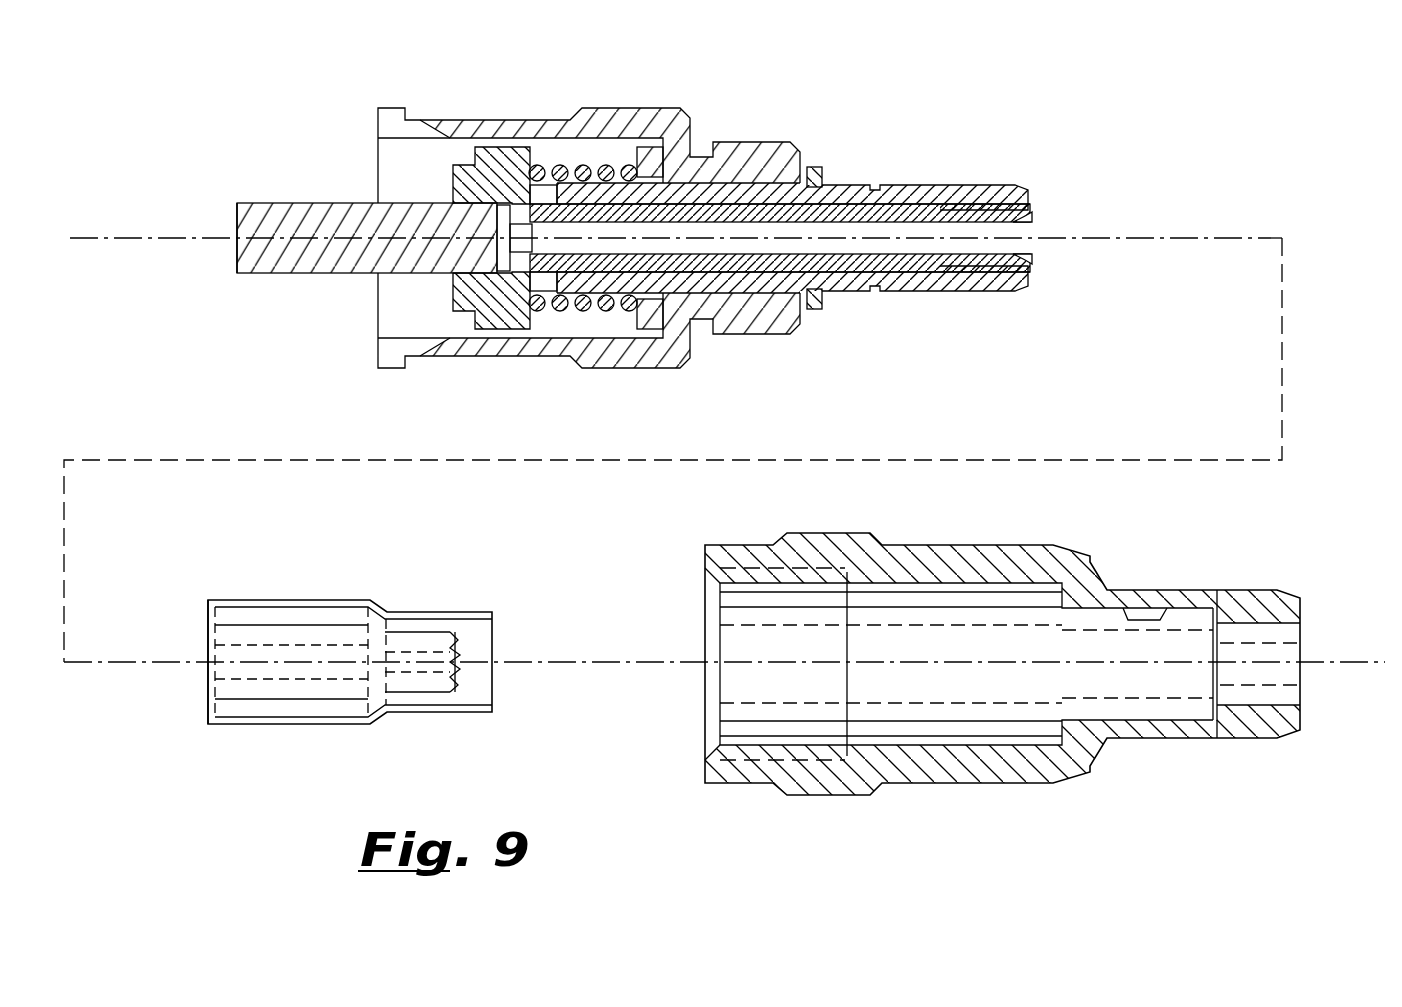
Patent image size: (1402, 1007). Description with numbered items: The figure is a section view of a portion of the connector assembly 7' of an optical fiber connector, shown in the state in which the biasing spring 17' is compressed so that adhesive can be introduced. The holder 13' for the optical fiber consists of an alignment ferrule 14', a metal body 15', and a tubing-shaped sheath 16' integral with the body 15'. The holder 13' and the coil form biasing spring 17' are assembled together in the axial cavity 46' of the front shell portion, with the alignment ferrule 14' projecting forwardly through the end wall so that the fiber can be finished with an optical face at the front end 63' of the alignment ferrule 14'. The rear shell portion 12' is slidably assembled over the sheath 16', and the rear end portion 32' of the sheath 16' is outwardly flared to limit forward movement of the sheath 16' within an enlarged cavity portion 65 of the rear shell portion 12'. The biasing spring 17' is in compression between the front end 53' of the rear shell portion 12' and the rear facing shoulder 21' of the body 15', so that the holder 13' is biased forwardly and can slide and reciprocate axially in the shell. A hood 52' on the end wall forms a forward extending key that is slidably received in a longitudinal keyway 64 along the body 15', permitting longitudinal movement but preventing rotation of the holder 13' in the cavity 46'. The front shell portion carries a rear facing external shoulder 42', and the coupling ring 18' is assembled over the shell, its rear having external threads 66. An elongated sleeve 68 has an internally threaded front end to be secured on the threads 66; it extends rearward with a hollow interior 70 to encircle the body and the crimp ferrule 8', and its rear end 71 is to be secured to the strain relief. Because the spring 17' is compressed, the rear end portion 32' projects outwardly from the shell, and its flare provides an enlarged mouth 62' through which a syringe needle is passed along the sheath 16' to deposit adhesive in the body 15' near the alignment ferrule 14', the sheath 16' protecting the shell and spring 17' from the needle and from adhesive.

The connector assembly 7' is at (589, 195).
The crimp ferrule 8' is at (350, 617).
The rear shell portion 12' is at (793, 280).
The holder 13' is at (780, 182).
The alignment ferrule 14' is at (377, 186).
The body 15' is at (420, 230).
The sheath 16' is at (910, 196).
The biasing spring 17' is at (551, 353).
The coupling ring 18' is at (689, 115).
The rear facing shoulder 21' is at (495, 138).
The rear end portion of the sheath 32' is at (1059, 200).
The rear facing external shoulder 42' is at (624, 356).
The axial cavity 46' is at (774, 287).
The hood 52' is at (583, 181).
The front end of the rear shell portion 53' is at (628, 196).
The enlarged mouth 62' is at (1093, 312).
The front end of the alignment ferrule 63' is at (198, 203).
The keyway 64 is at (543, 200).
The enlarged cavity portion 65 is at (1030, 255).
The external threads 66 is at (773, 586).
The sleeve 68 is at (932, 546).
The hollow interior 70 is at (1170, 608).
The rear end of the sleeve 71 is at (1240, 600).